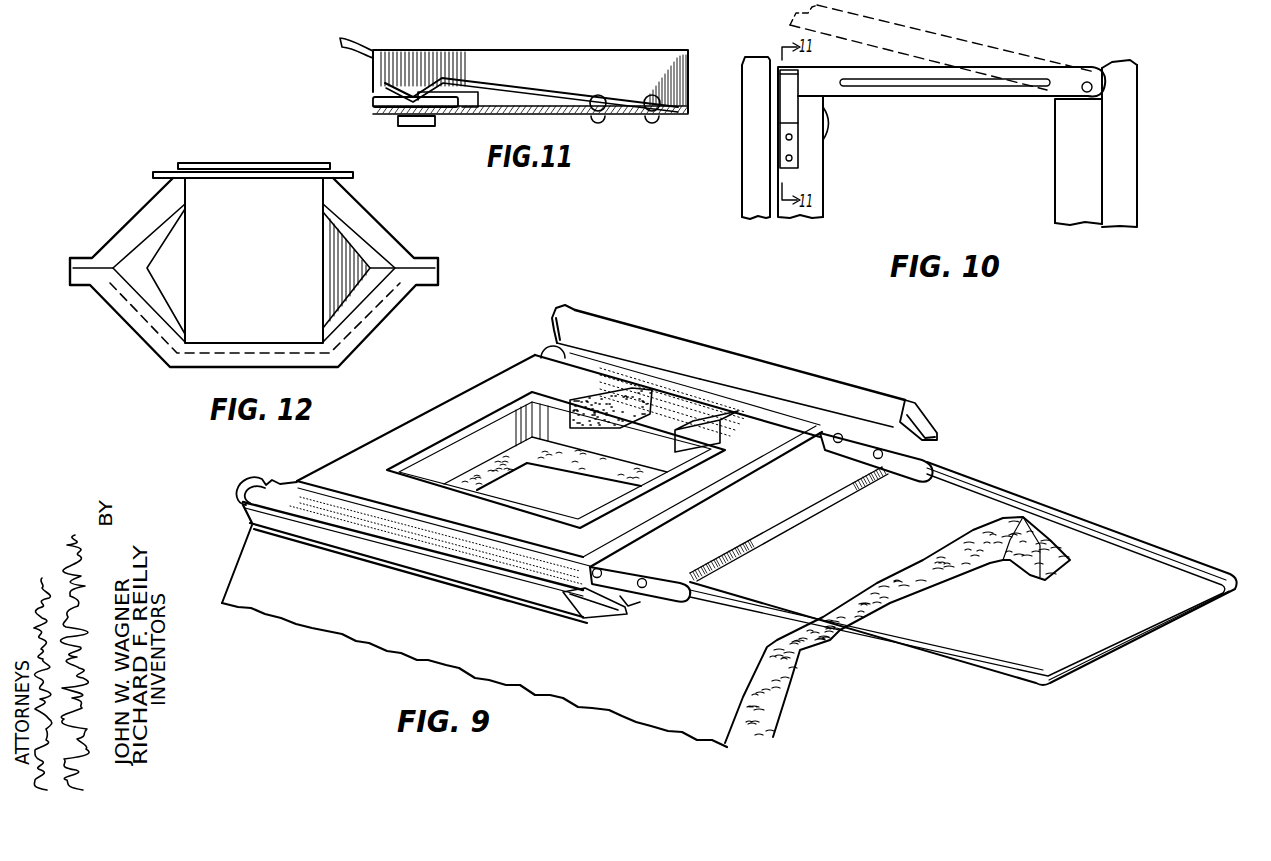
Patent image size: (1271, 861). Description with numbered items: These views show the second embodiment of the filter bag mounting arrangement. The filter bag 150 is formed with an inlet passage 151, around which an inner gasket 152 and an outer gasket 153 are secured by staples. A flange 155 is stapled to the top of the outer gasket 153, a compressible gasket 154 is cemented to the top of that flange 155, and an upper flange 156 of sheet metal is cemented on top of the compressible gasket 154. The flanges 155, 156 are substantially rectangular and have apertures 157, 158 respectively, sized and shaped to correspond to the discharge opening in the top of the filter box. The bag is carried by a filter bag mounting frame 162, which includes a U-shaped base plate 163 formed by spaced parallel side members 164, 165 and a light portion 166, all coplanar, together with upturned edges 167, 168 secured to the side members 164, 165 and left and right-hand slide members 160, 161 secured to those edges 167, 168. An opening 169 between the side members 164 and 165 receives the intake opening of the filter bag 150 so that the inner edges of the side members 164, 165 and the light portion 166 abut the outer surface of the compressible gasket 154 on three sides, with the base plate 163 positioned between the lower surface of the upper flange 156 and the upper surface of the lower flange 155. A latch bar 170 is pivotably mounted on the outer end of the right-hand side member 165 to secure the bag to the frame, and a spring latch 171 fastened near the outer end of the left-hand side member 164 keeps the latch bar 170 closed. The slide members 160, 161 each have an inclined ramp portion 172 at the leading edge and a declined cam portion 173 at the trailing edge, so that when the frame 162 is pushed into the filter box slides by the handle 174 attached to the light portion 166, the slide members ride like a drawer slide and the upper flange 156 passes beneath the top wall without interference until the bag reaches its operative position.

In FIG. 9, the filter bag 150 is at (281, 633).
In FIG. 9, the inlet passage 151 is at (345, 470).
In FIG. 9, the inner gasket 152 is at (483, 467).
In FIG. 9, the outer gasket 153 is at (490, 478).
In FIG. 9, the compressible gasket 154 is at (617, 397).
In FIG. 12, the flange 155 is at (353, 175).
In FIG. 9, the flange 155 is at (470, 588).
In FIG. 12, the upper flange 156 is at (200, 163).
In FIG. 9, the upper flange 156 is at (417, 433).
In FIG. 9, the aperture 157 is at (540, 413).
In FIG. 9, the aperture 158 is at (483, 497).
In FIG. 10, the left-hand slide member 160 is at (748, 132).
In FIG. 9, the left-hand slide member 160 is at (413, 540).
In FIG. 10, the right-hand slide member 161 is at (1127, 170).
In FIG. 9, the right-hand slide member 161 is at (787, 382).
In FIG. 9, the filter bag mounting frame 162 is at (897, 386).
In FIG. 10, the U-shaped base plate 163 is at (807, 222).
In FIG. 9, the U-shaped base plate 163 is at (833, 510).
In FIG. 11, the side member 164 is at (588, 113).
In FIG. 10, the side member 164 is at (810, 183).
In FIG. 10, the side member 165 is at (1060, 152).
In FIG. 9, the side member 165 is at (717, 407).
In FIG. 9, the light portion 166 is at (727, 535).
In FIG. 10, the upturned edge 167 is at (775, 212).
In FIG. 11, the upturned edge 168 is at (487, 68).
In FIG. 10, the upturned edge 168 is at (1088, 224).
In FIG. 9, the upturned edge 168 is at (805, 403).
In FIG. 10, the opening 169 is at (825, 137).
In FIG. 11, the latch bar 170 is at (373, 103).
In FIG. 10, the latch bar 170 is at (1030, 88).
In FIG. 11, the spring latch 171 is at (547, 92).
In FIG. 10, the spring latch 171 is at (793, 117).
In FIG. 10, the inclined ramp portion 172 is at (1127, 63).
In FIG. 9, the inclined ramp portion 172 is at (568, 313).
In FIG. 9, the declined cam portion 173 is at (917, 427).
In FIG. 9, the handle 174 is at (1152, 632).